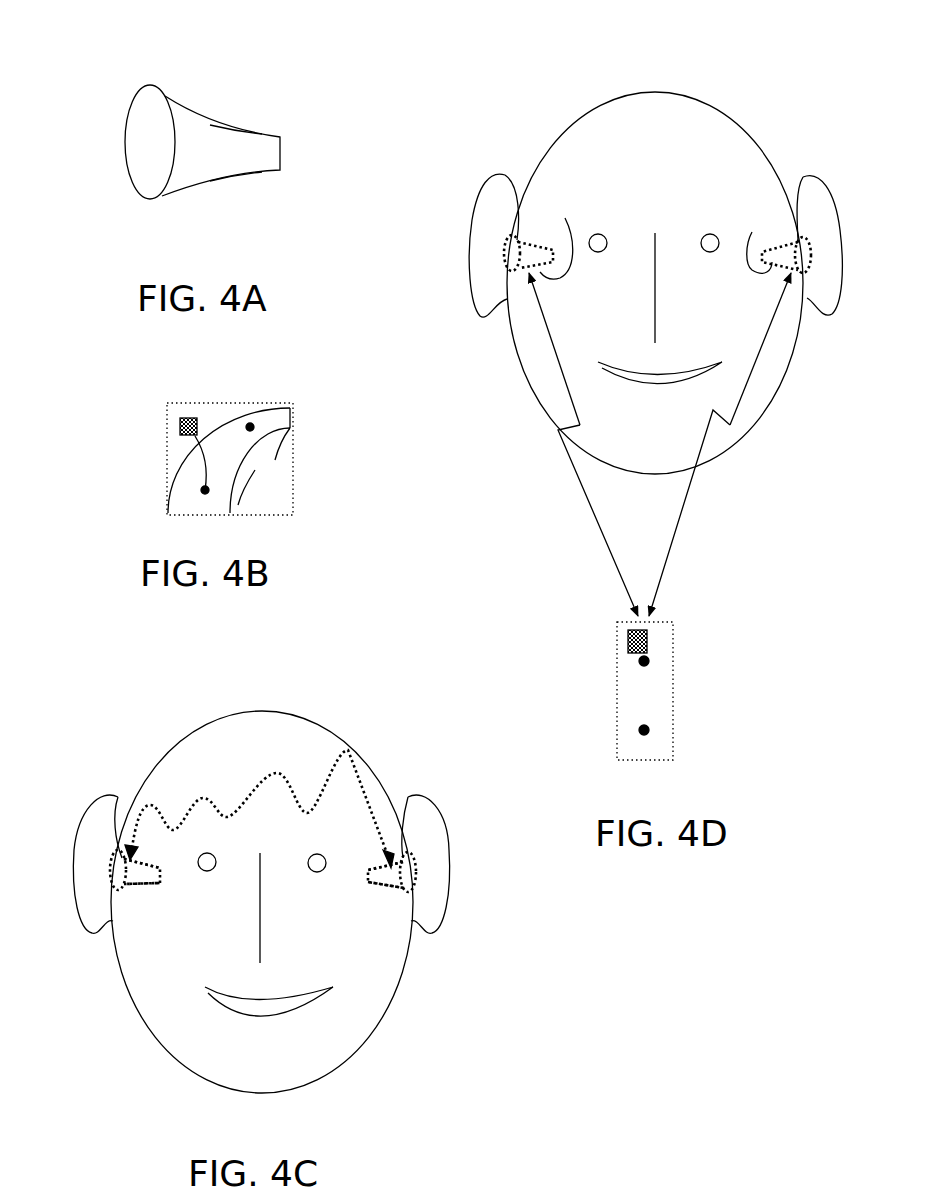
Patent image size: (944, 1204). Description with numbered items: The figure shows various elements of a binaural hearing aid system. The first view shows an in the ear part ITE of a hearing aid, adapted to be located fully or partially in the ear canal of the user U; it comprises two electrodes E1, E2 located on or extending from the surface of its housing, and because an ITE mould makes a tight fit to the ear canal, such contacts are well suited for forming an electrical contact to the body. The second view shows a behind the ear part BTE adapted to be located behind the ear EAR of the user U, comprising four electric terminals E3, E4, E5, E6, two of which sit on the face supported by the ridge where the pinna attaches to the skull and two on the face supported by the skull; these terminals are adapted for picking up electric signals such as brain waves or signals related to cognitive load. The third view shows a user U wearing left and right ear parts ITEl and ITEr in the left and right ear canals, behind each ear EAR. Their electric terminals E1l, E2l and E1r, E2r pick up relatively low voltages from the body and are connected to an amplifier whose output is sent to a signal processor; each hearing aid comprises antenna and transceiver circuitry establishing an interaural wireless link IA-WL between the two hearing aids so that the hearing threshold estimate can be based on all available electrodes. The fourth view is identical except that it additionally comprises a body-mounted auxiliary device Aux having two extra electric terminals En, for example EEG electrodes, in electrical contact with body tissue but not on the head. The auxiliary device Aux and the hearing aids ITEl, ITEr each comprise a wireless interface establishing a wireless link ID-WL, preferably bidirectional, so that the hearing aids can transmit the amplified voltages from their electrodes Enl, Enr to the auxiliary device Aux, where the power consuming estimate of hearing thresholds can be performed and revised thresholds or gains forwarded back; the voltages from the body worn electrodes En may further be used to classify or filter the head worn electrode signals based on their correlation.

In FIG. 4A, the in the ear part ITE is at (185, 132).
In FIG. 4A, the electrode E1 is at (233, 130).
In FIG. 4A, the electrode E2 is at (233, 174).
In FIG. 4B, the behind the ear part BTE is at (222, 447).
In FIG. 4B, the electric terminal E3 is at (250, 427).
In FIG. 4B, the electric terminal E4 is at (187, 453).
In FIG. 4B, the electric terminal E5 is at (283, 433).
In FIG. 4B, the electric terminal E6 is at (235, 488).
In FIG. 4C, the user U is at (192, 712).
In FIG. 4D, the user U is at (565, 92).
In FIG. 4C, the ear EAR is at (108, 823).
In FIG. 4D, the ear EAR is at (497, 210).
In FIG. 4C, the right ear part ITEr is at (120, 868).
In FIG. 4D, the right ear part ITEr is at (508, 250).
In FIG. 4C, the left ear part ITEl is at (412, 872).
In FIG. 4D, the left ear part ITEl is at (808, 252).
In FIG. 4C, the electric terminal of right part E1r is at (143, 864).
In FIG. 4C, the electric terminal of right part E2r is at (145, 881).
In FIG. 4C, the electric terminal of left part E1l is at (383, 865).
In FIG. 4C, the electric terminal of left part E2l is at (380, 886).
In FIG. 4C, the interaural wireless link IA-WL is at (277, 773).
In FIG. 4D, the electric terminals of right hearing aid Enr is at (540, 240).
In FIG. 4D, the electric terminals of left hearing aid Enl is at (775, 247).
In FIG. 4D, the wireless link ID-WL is at (593, 512).
In FIG. 4D, the electric terminals En is at (644, 730).
In FIG. 4D, the auxiliary device Aux is at (658, 680).